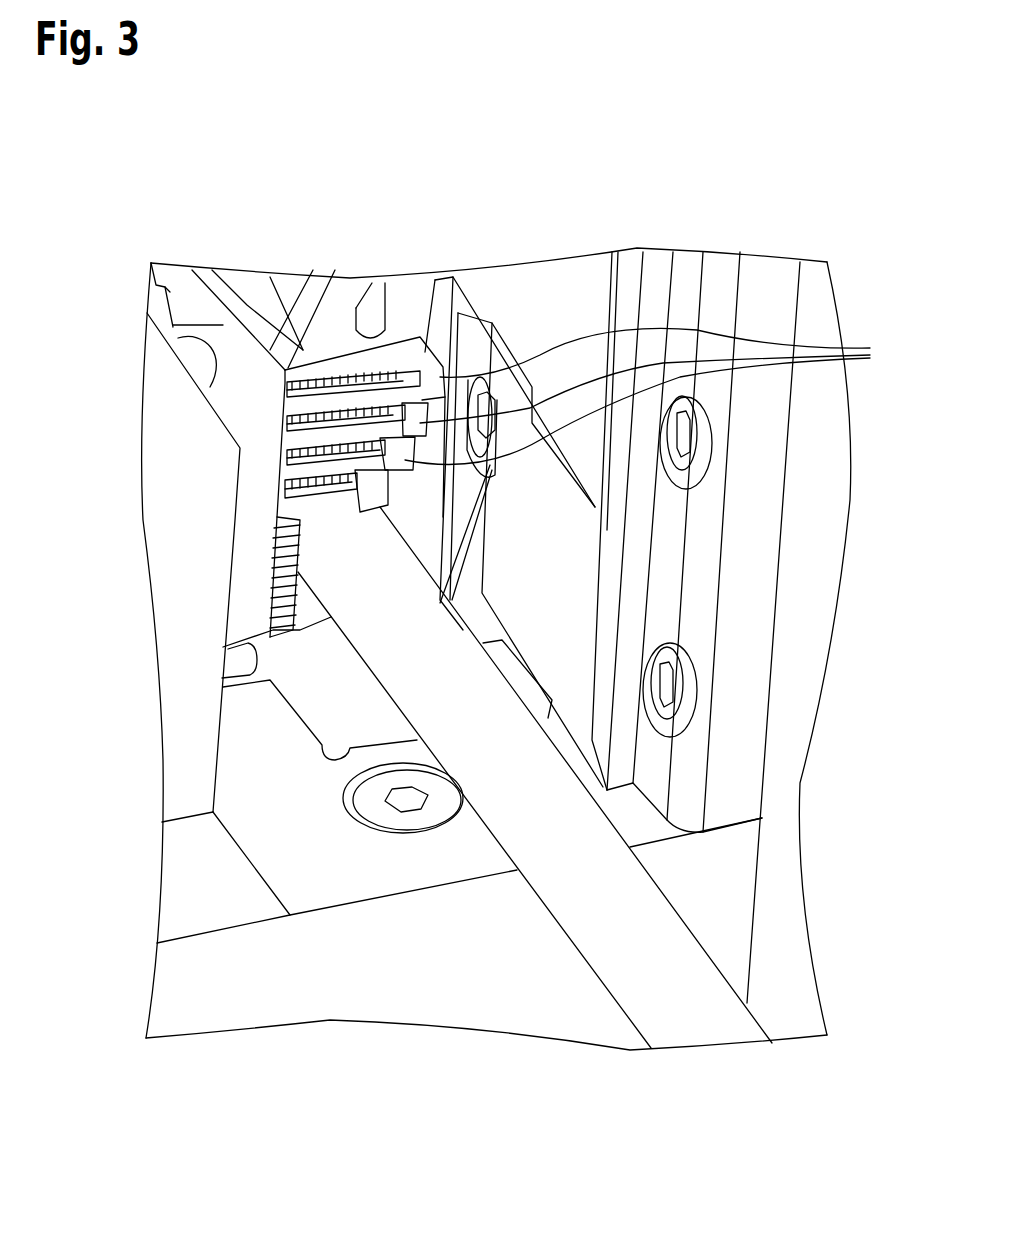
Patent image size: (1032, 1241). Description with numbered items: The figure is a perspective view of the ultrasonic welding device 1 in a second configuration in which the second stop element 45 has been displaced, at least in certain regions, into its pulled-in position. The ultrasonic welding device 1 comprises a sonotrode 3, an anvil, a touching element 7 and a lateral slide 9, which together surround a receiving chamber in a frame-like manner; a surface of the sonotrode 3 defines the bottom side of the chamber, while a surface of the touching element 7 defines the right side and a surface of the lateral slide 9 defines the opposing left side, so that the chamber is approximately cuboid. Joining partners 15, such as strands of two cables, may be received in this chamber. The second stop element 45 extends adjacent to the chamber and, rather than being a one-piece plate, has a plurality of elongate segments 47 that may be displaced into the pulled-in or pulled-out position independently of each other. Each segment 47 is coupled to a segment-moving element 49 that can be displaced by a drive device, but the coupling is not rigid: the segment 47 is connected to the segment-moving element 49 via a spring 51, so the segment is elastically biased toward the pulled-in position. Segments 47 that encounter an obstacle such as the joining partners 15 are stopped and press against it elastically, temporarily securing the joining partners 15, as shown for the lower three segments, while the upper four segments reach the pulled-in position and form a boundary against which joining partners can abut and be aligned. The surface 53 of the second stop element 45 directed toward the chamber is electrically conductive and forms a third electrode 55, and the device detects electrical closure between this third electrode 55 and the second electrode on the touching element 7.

The ultrasonic welding device 1 is at (118, 213).
The sonotrode 3 is at (311, 605).
The touching element 7 is at (427, 294).
The lateral slide 9 is at (227, 287).
The joining partners 15 is at (690, 1018).
The second stop element 45 is at (306, 357).
The elongate segments 47 is at (656, 396).
The segment-moving element 49 is at (334, 363).
The spring 51 is at (375, 285).
The surface 53 is at (402, 300).
The third electrode 55 is at (418, 192).